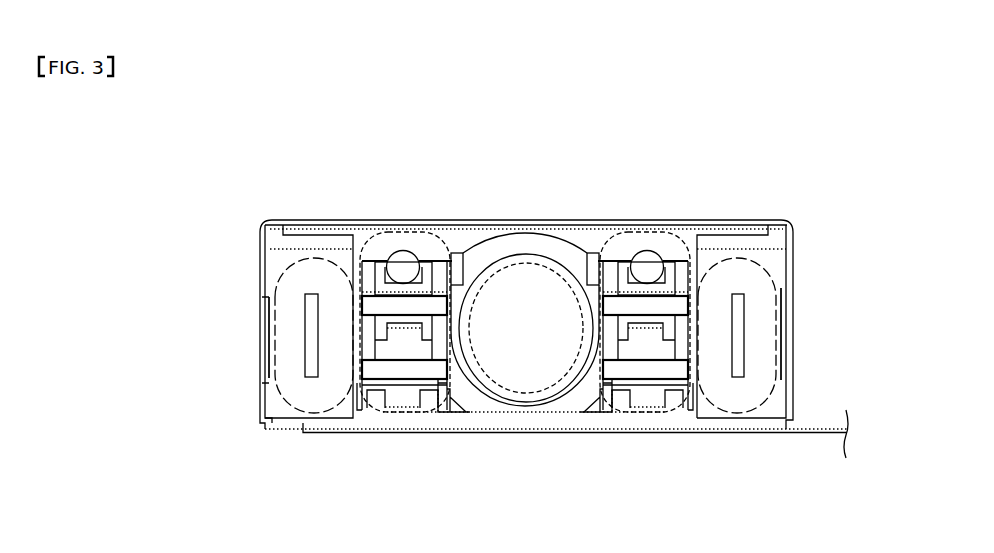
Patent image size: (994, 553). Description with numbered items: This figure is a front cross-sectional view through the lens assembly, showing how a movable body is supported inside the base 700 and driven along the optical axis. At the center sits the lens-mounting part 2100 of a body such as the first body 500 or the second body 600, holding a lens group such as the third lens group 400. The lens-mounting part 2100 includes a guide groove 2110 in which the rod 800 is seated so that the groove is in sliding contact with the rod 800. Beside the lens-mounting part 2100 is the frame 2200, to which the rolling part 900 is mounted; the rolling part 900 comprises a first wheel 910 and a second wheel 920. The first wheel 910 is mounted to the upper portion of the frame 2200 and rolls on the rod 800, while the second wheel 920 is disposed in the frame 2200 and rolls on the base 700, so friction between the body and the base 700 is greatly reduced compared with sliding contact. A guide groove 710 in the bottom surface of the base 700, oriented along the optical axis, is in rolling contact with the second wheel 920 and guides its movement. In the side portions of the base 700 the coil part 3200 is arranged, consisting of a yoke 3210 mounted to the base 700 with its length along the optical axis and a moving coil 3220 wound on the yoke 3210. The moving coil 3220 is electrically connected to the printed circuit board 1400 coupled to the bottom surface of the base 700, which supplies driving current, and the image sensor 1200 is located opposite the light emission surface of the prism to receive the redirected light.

The image sensor 1200 is at (743, 227).
The base 700 is at (282, 423).
The printed circuit board 1400 is at (807, 434).
The coil part 3200 is at (181, 278).
The moving coil 3220 is at (295, 282).
The yoke 3210 is at (309, 307).
The frame 2200 is at (367, 341).
The guide groove 2110 is at (403, 252).
The rod 800 is at (413, 266).
The rolling part 900 is at (190, 382).
The first wheel 910 is at (373, 303).
The second wheel 920 is at (368, 367).
The guide groove 710 is at (429, 403).
The lens-mounting part 2100 is at (524, 246).
The second body 600 is at (457, 398).
The first body 500 is at (580, 398).
The third lens group 400 is at (525, 366).